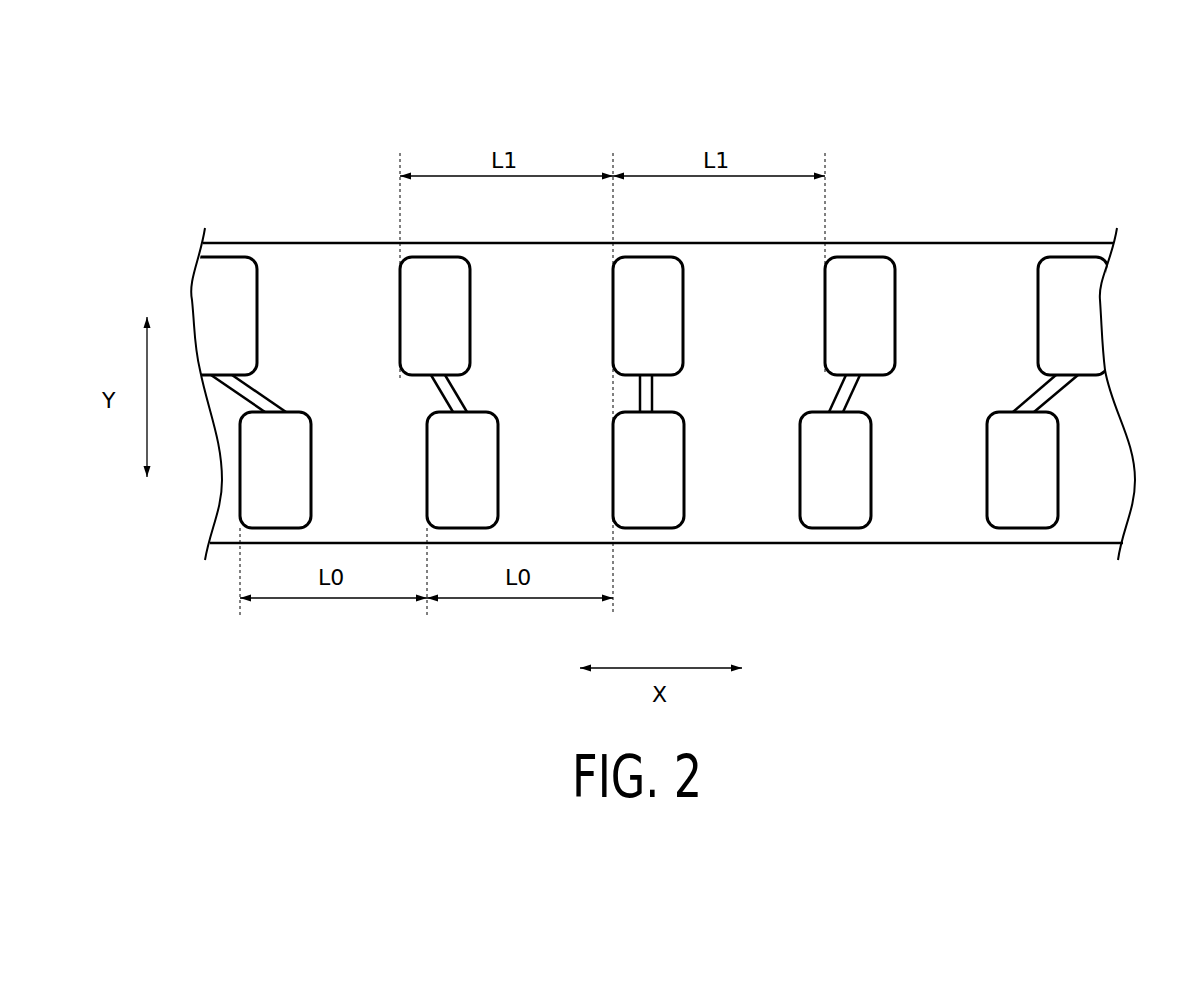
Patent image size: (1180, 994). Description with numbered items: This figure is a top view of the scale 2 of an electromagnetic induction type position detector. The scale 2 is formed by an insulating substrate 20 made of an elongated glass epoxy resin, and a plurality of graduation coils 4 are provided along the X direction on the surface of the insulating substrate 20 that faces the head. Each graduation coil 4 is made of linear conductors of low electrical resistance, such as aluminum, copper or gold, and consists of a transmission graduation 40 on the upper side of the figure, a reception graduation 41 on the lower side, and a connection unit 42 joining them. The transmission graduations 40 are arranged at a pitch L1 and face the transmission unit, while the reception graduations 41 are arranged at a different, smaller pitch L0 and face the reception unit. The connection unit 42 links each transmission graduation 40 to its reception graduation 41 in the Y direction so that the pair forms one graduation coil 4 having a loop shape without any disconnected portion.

The scale 2 is at (1108, 148).
The graduation coil 4 is at (383, 272).
The insulating substrate 20 is at (995, 242).
The transmission graduation 40 is at (683, 297).
The reception graduation 41 is at (685, 513).
The connection unit 42 is at (655, 390).